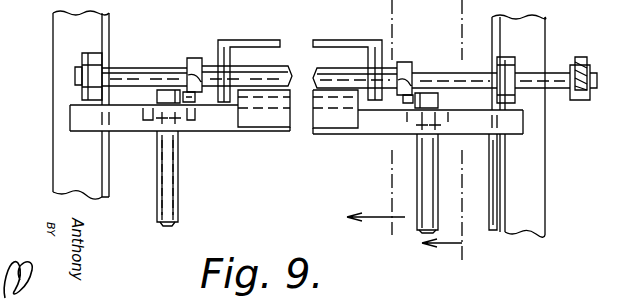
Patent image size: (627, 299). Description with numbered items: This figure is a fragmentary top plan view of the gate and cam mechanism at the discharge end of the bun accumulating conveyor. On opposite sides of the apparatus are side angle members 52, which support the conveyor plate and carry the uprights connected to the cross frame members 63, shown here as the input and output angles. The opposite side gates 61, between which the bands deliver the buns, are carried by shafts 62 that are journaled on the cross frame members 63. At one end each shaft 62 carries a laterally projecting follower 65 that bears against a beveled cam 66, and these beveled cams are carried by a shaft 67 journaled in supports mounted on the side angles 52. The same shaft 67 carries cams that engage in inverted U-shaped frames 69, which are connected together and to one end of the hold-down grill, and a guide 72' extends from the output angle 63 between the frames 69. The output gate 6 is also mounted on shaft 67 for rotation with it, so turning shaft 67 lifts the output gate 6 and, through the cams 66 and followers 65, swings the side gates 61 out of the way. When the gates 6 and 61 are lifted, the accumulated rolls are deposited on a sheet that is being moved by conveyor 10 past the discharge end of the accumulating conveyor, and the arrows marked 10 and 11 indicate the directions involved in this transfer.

The output gate 6 is at (320, 64).
The conveyor 10 is at (452, 133).
The direction arrow 11 is at (377, 130).
The angle members 52 is at (55, 155).
The side gates 61 is at (157, 170).
The shafts 62 is at (172, 228).
The cross frame members 63 is at (270, 133).
The follower 65 is at (198, 100).
The beveled cam 66 is at (193, 58).
The shaft 67 is at (553, 73).
The inverted U-shaped frames 69 is at (223, 47).
The guide 72' is at (258, 121).